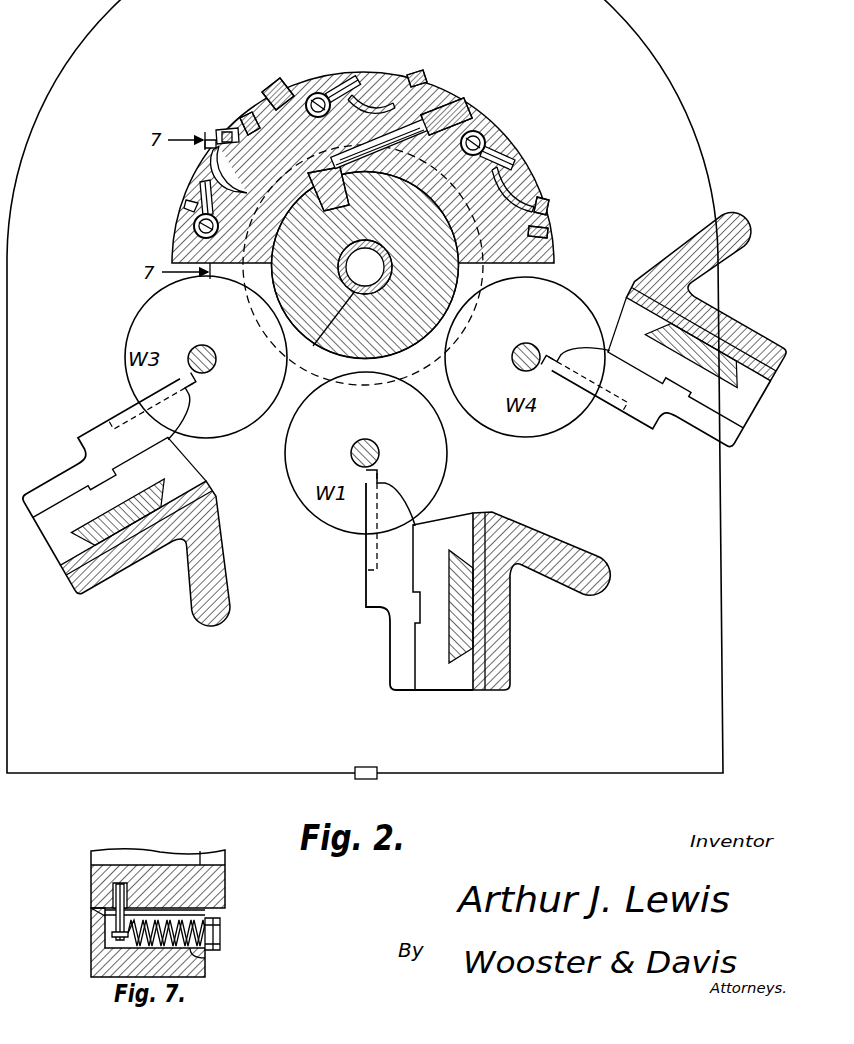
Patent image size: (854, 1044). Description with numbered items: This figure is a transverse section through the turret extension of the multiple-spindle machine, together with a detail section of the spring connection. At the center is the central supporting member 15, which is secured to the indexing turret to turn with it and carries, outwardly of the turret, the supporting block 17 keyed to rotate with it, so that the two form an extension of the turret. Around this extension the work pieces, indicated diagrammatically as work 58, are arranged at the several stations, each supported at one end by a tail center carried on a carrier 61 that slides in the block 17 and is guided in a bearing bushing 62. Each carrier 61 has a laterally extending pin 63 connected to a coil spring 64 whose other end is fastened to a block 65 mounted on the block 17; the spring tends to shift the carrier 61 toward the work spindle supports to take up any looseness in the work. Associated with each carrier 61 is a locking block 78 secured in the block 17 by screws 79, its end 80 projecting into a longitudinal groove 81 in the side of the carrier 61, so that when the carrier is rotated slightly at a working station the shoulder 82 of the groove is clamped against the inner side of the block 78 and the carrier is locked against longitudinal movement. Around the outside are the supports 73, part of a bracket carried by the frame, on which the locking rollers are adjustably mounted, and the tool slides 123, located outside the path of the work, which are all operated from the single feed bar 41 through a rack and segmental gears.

In FIG. 2, the supporting block 17 is at (283, 88).
In FIG. 7, the supporting block 17 is at (92, 970).
In FIG. 2, the feed motion bar 41 is at (322, 337).
In FIG. 2, the central supporting member 15 is at (405, 338).
In FIG. 2, the work 58 is at (379, 449).
In FIG. 2, the carrier 61 is at (206, 160).
In FIG. 7, the carrier 61 is at (220, 887).
In FIG. 2, the bearing bushing 62 is at (186, 206).
In FIG. 2, the pin 63 is at (196, 190).
In FIG. 7, the pin 63 is at (117, 893).
In FIG. 2, the coil spring 64 is at (196, 224).
In FIG. 7, the coil spring 64 is at (206, 958).
In FIG. 7, the block 65 is at (208, 923).
In FIG. 2, the support 73 is at (535, 538).
In FIG. 2, the locking block 78 is at (236, 128).
In FIG. 2, the screws 79 is at (234, 132).
In FIG. 2, the end 80 is at (218, 136).
In FIG. 2, the longitudinal groove 81 is at (207, 146).
In FIG. 2, the shoulder 82 is at (226, 134).
In FIG. 2, the tool slide 123 is at (430, 690).